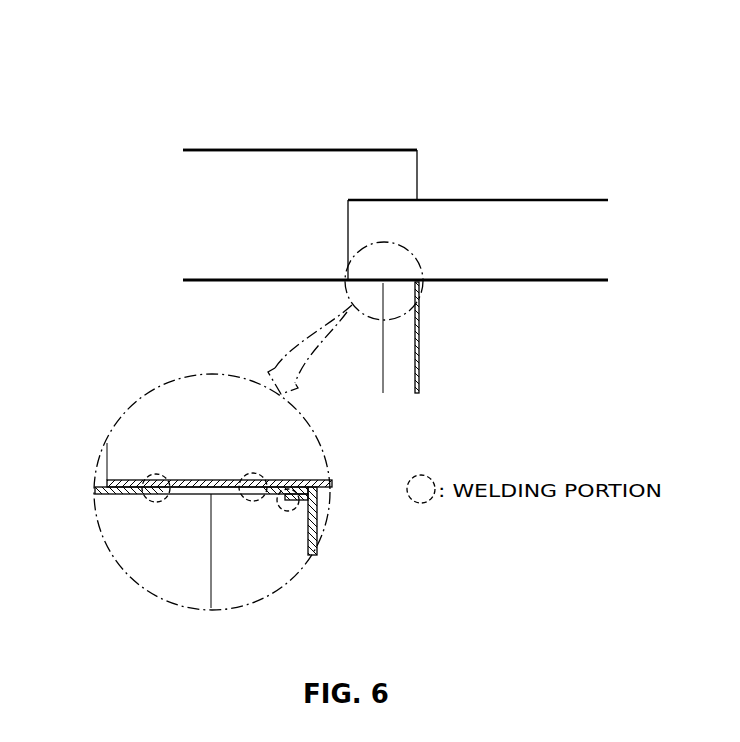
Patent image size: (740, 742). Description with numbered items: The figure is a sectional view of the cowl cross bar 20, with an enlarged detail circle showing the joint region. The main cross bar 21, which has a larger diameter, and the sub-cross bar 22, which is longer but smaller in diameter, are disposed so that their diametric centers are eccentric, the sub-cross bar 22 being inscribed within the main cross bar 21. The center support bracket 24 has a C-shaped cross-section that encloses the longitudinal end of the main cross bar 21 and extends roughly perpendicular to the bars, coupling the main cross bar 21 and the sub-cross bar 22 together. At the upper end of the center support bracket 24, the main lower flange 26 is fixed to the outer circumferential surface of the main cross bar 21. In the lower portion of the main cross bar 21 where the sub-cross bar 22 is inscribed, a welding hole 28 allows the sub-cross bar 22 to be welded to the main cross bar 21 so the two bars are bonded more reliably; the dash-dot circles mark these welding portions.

The cowl cross bar 20 is at (413, 137).
The main cross bar 21 is at (228, 150).
The sub-cross bar 22 is at (520, 200).
The center support bracket 24 is at (420, 343).
The main lower flange 26 is at (290, 504).
The welding hole 28 is at (185, 496).